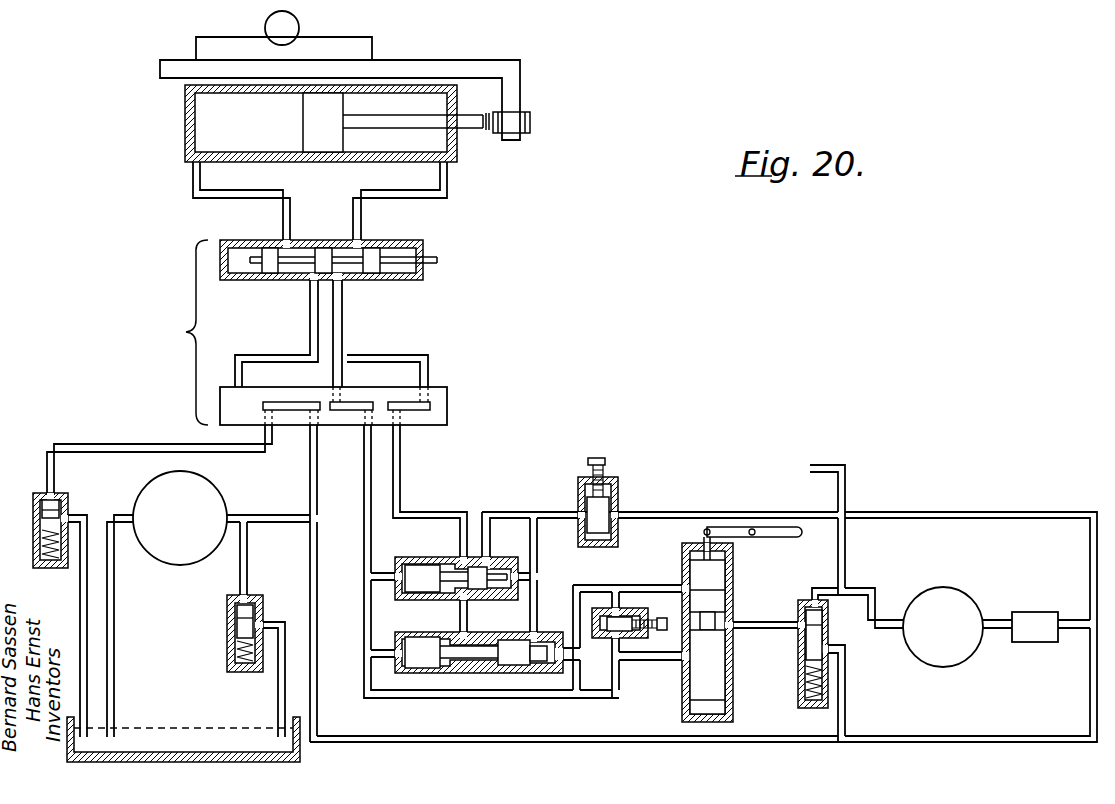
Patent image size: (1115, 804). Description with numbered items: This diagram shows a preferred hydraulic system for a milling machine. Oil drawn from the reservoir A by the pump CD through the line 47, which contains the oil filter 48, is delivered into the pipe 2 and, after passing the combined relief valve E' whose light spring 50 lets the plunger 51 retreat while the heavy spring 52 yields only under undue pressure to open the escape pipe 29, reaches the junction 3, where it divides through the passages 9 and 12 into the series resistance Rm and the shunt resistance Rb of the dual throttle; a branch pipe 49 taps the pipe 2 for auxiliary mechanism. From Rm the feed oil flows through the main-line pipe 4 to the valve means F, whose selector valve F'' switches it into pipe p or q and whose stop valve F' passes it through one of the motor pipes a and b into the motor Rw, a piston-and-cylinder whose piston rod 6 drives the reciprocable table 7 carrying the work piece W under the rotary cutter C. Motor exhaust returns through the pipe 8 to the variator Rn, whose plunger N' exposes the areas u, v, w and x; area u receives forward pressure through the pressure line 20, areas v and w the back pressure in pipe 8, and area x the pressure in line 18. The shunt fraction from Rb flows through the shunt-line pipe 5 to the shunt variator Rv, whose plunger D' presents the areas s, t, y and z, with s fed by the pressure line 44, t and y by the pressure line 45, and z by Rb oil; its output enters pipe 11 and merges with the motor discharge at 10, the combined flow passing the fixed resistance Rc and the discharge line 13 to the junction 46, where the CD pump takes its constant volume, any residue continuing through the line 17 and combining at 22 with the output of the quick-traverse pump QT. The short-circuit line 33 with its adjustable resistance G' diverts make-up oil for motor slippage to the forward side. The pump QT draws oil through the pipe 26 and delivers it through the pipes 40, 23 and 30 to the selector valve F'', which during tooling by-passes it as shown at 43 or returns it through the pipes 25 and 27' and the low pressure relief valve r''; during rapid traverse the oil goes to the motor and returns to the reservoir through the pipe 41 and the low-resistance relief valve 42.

The rotary cutter C is at (282, 28).
The work piece W is at (284, 48).
The reciprocable table 7 is at (477, 64).
The motor Rw is at (321, 123).
The piston rod 6 is at (466, 134).
The motor pipe a is at (234, 192).
The motor pipe b is at (402, 190).
The valve means F is at (178, 332).
The stop valve F' is at (343, 253).
The selector valve F'' is at (353, 395).
The pipe q is at (309, 305).
The pipe p is at (343, 308).
The by-pass 43 is at (293, 402).
The pipe 41 is at (137, 444).
The low-resistance relief valve 42 is at (70, 506).
The quick-traverse pump QT is at (160, 576).
The pipe 26 is at (114, 592).
The junction 22 is at (318, 519).
The conduit 23 is at (246, 515).
The pipe 40 is at (288, 515).
The pipe 30 is at (312, 488).
The pipe 25 is at (248, 560).
The low pressure relief valve r'' is at (229, 633).
The pipe 27' is at (263, 679).
The reservoir A is at (178, 725).
The return pipe 8 is at (442, 512).
The line 18 is at (517, 512).
The discharge line 13 is at (717, 512).
The junction 10 is at (538, 514).
The fixed resistance Rc is at (621, 481).
The pipe 11 is at (537, 597).
The valve plunger N' is at (457, 566).
The variator Rn is at (487, 578).
The area u is at (412, 557).
The area v is at (448, 557).
The area w is at (480, 557).
The area x is at (510, 557).
The pressure line 20 is at (391, 582).
The pressure line 45 is at (467, 616).
The pressure line 44 is at (381, 650).
The valve plunger D' is at (479, 661).
The shunt variator Rv is at (522, 652).
The area s is at (412, 673).
The area t is at (443, 673).
The area y is at (494, 673).
The area z is at (538, 673).
The main-line pipe 4 is at (437, 698).
The line 17 is at (592, 742).
The shunt-line pipe 5 is at (614, 585).
The passage 9 is at (682, 656).
The short-circuit line 33 is at (620, 611).
The adjustable resistance G' is at (598, 655).
The shunt resistance Rb is at (742, 624).
The series resistance Rm is at (707, 672).
The passage 12 is at (682, 587).
The junction 3 is at (740, 625).
The combined relief valve E' is at (800, 654).
The plunger 51 is at (806, 636).
The light spring 50 is at (805, 676).
The heavy spring 52 is at (805, 693).
The escape pipe 29 is at (846, 694).
The branch pipe 49 is at (847, 494).
The pipe 2 is at (897, 630).
The pump CD is at (966, 664).
The oil filter 48 is at (1036, 627).
The line 47 is at (1082, 620).
The junction 46 is at (1088, 633).